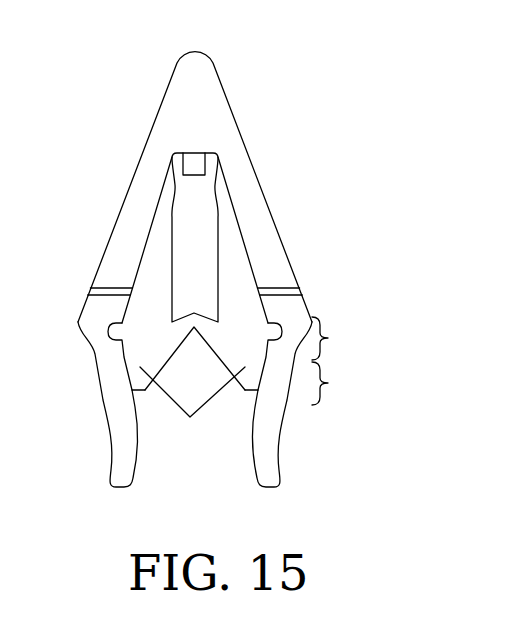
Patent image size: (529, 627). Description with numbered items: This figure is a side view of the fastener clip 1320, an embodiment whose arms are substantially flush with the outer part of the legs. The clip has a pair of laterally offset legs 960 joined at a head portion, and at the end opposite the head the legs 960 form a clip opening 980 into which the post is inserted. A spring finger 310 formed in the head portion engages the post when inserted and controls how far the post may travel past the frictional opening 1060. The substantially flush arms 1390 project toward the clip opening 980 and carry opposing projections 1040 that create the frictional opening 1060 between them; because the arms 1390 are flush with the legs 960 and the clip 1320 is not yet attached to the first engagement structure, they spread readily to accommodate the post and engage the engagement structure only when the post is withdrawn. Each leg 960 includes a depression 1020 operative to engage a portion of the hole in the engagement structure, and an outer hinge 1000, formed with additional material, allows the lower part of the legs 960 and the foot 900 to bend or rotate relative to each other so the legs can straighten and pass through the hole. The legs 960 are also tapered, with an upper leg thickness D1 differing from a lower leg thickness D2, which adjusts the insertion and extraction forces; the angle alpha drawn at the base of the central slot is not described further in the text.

The fastener clip 1320 is at (146, 78).
The spring finger 310 is at (195, 165).
The legs 960 is at (122, 248).
The arms 1390 is at (137, 340).
The outer hinge 1000 is at (347, 338).
The depression 1020 is at (346, 383).
The foot 900 is at (127, 445).
The frictional opening 1060 is at (193, 327).
The projections 1040 is at (192, 406).
The clip opening 980 is at (188, 465).
The upper leg thickness D1 is at (177, 203).
The lower leg thickness D2 is at (157, 290).
The angle alpha is at (191, 318).